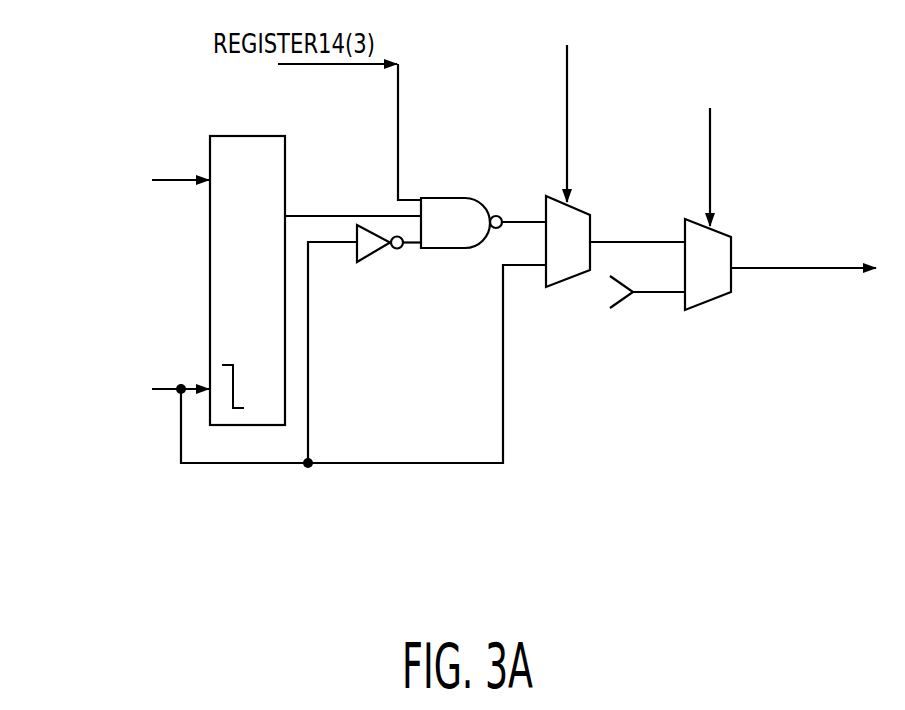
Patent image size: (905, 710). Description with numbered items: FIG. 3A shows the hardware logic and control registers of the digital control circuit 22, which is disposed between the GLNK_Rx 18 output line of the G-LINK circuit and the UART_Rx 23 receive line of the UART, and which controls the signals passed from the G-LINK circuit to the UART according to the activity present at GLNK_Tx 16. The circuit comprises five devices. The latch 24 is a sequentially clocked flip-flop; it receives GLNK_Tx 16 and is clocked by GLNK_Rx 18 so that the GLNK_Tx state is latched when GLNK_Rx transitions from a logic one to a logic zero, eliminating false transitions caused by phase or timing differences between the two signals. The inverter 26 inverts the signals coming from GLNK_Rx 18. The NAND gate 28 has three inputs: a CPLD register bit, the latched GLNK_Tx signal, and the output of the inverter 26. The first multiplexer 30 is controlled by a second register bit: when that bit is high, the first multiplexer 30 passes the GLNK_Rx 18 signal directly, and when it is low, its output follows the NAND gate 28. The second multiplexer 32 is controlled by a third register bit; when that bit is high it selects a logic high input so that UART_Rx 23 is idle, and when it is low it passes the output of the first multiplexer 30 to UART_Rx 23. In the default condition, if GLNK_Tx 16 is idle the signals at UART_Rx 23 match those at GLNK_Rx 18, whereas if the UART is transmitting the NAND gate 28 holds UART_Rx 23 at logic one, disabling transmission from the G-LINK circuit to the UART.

The GLNK_Tx 16 is at (179, 176).
The GLNK_Rx 18 is at (160, 385).
The digital control circuit 22 is at (608, 445).
The UART_Rx 23 is at (795, 270).
The U1 24 is at (210, 259).
The U2 26 is at (355, 256).
The U3 28 is at (446, 198).
The U4 30 is at (583, 207).
The U5 32 is at (712, 305).